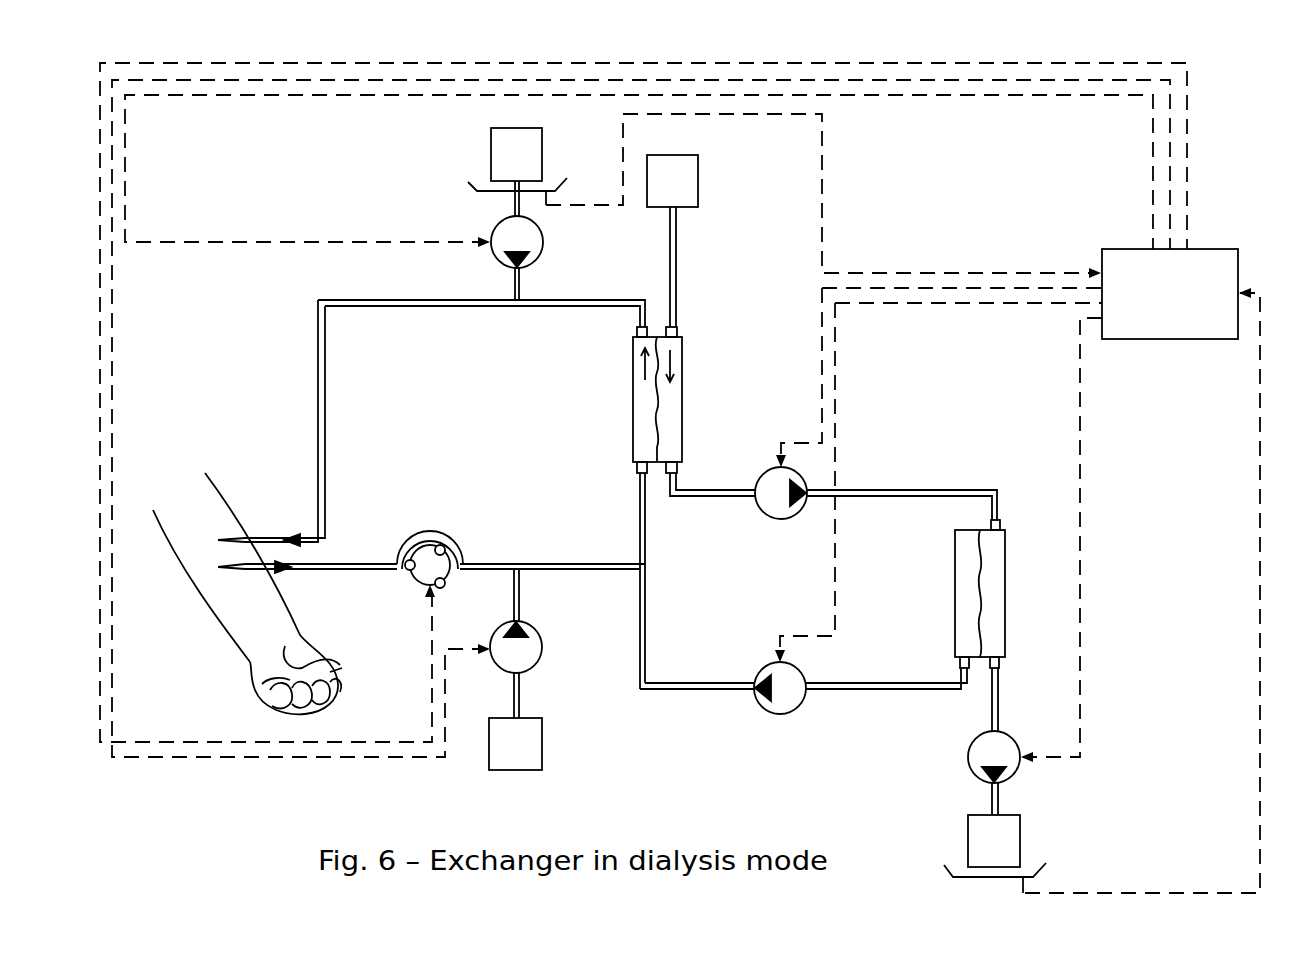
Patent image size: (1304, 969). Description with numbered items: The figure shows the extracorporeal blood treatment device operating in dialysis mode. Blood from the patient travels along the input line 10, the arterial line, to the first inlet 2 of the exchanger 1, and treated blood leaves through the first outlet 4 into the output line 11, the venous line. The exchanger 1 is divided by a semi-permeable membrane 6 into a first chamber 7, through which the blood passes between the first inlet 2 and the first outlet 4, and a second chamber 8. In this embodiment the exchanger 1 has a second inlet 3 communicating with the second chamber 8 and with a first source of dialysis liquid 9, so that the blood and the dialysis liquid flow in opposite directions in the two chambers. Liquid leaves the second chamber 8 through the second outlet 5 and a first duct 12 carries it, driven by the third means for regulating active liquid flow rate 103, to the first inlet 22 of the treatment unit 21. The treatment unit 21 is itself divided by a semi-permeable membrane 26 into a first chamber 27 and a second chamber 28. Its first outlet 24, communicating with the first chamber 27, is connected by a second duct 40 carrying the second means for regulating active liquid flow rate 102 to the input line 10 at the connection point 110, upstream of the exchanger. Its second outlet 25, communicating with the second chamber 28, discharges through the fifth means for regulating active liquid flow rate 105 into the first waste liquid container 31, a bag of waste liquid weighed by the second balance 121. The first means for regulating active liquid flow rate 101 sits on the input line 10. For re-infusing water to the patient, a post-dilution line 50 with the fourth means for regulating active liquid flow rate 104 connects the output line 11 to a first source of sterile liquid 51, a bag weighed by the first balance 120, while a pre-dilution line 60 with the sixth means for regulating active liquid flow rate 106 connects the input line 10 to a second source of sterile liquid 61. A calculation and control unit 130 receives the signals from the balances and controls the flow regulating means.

The exchanger 1 is at (618, 387).
The first inlet 2 is at (637, 468).
The second inlet 3 is at (680, 330).
The first fluid outlet 4 is at (637, 330).
The second fluid outlet 5 is at (678, 470).
The semi-permeable membrane 6 is at (662, 395).
The first chamber 7 is at (640, 405).
The second chamber 8 is at (675, 437).
The first source of dialysis liquid 9 is at (698, 185).
The input line 10 is at (345, 570).
The output line 11 is at (316, 405).
The first duct 12 is at (910, 490).
The treatment unit 21 is at (962, 565).
The first fluid inlet 22 is at (1003, 525).
The first fluid outlet 24 is at (958, 660).
The second fluid outlet 25 is at (1002, 660).
The semi-permeable membrane 26 is at (985, 585).
The first chamber 27 is at (962, 560).
The second chamber 28 is at (1000, 630).
The first waste liquid container 31 is at (968, 840).
The second duct 40 is at (665, 690).
The post-dilution line 50 is at (512, 290).
The first source of sterile liquid 51 is at (543, 162).
The pre-dilution line 60 is at (520, 698).
The second source of sterile liquid 61 is at (543, 750).
The first means for regulating active liquid flow rate 101 is at (410, 548).
The second means for regulating active liquid flow rate 102 is at (758, 672).
The third means for regulating active liquid flow rate 103 is at (760, 512).
The fourth means for regulating active liquid flow rate 104 is at (493, 232).
The fifth means for regulating active liquid flow rate 105 is at (968, 758).
The sixth means for regulating active liquid flow rate 106 is at (542, 660).
The connection point 110 is at (640, 570).
The first balance 120 is at (470, 185).
The second balance 121 is at (946, 870).
The calculation and control unit 130 is at (1160, 340).